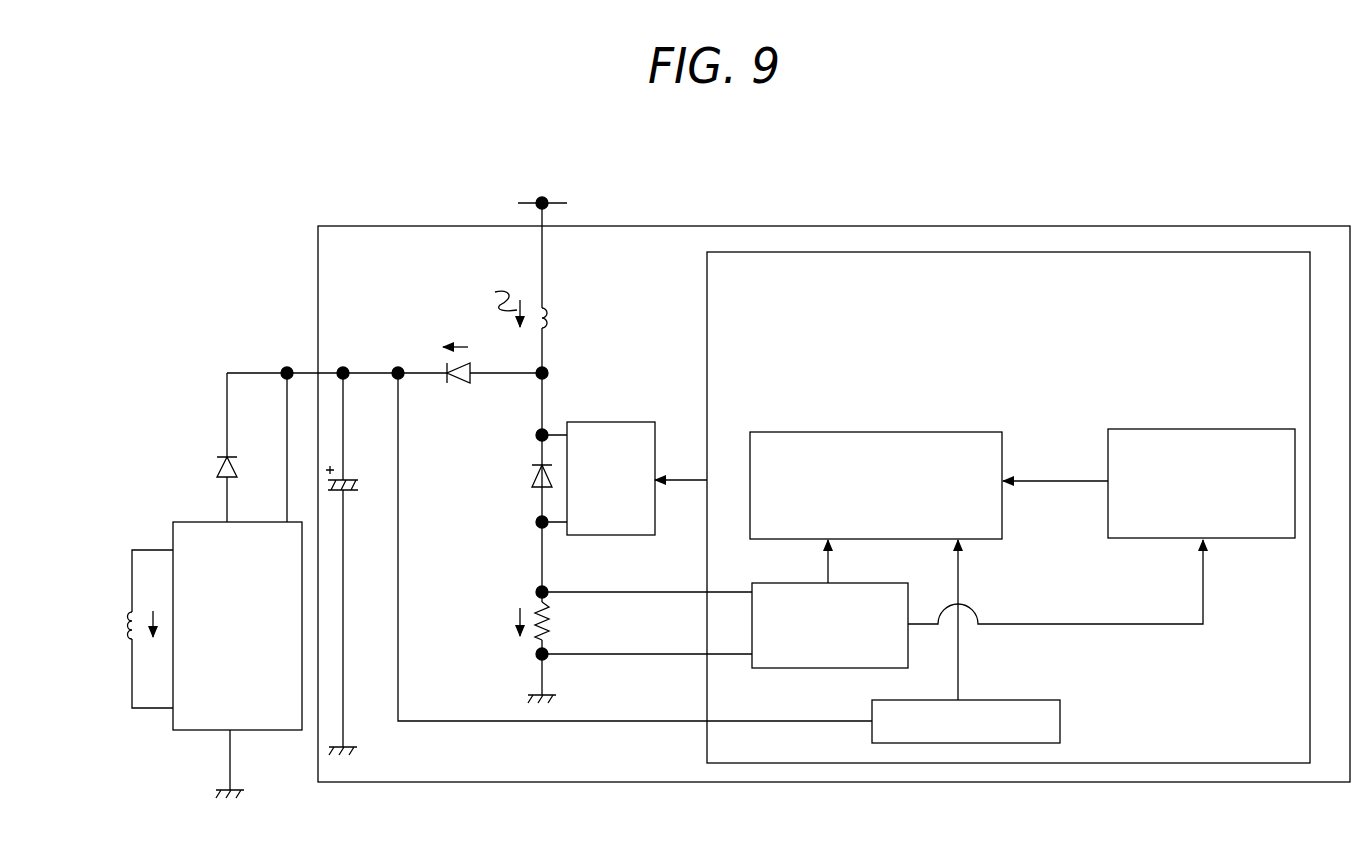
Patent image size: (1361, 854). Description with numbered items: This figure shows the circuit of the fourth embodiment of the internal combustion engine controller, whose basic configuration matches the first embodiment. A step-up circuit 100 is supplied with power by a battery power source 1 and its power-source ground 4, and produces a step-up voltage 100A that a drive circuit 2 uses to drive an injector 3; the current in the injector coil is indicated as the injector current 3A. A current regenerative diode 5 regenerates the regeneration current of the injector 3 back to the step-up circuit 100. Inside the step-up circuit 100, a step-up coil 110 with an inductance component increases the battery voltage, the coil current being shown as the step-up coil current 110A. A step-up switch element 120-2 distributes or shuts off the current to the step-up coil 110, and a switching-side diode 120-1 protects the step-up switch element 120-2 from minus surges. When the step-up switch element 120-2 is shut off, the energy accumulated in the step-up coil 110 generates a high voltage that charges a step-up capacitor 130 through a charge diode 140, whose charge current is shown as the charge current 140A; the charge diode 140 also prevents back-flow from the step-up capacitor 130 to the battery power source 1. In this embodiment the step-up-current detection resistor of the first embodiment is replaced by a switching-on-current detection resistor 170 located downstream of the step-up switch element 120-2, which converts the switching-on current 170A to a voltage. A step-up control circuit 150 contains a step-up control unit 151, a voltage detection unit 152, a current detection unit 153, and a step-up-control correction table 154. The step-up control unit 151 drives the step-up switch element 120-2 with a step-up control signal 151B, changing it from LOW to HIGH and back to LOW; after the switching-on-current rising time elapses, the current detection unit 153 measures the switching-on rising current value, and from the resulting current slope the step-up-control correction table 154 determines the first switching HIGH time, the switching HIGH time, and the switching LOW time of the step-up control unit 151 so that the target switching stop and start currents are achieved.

The battery power source 1 is at (547, 197).
The drive circuit 2 is at (172, 521).
The injector 3 is at (125, 612).
The solenoid current 3A is at (143, 642).
The power-source ground 4 is at (225, 790).
The current regenerative diode 5 is at (220, 458).
The step-up circuit 100 is at (318, 312).
The step-up voltage 100A is at (258, 372).
The step-up coil 110 is at (555, 315).
The inductor current 110A is at (496, 294).
The switching-side diode 120-1 is at (527, 476).
The step-up switch element 120-2 is at (580, 535).
The step-up capacitor 130 is at (350, 493).
The charge diode 140 is at (446, 372).
The diode current 140A is at (466, 347).
The step-up control circuit 150 is at (800, 252).
The step-up control unit 151 is at (907, 430).
The step-up control signal 151B is at (700, 478).
The voltage detection unit 152 is at (872, 705).
The current detection unit 153 is at (908, 637).
The step-up-control correction table 154 is at (1163, 429).
The switching-on-current detection resistor 170 is at (557, 625).
The switching-on current 170A is at (510, 618).